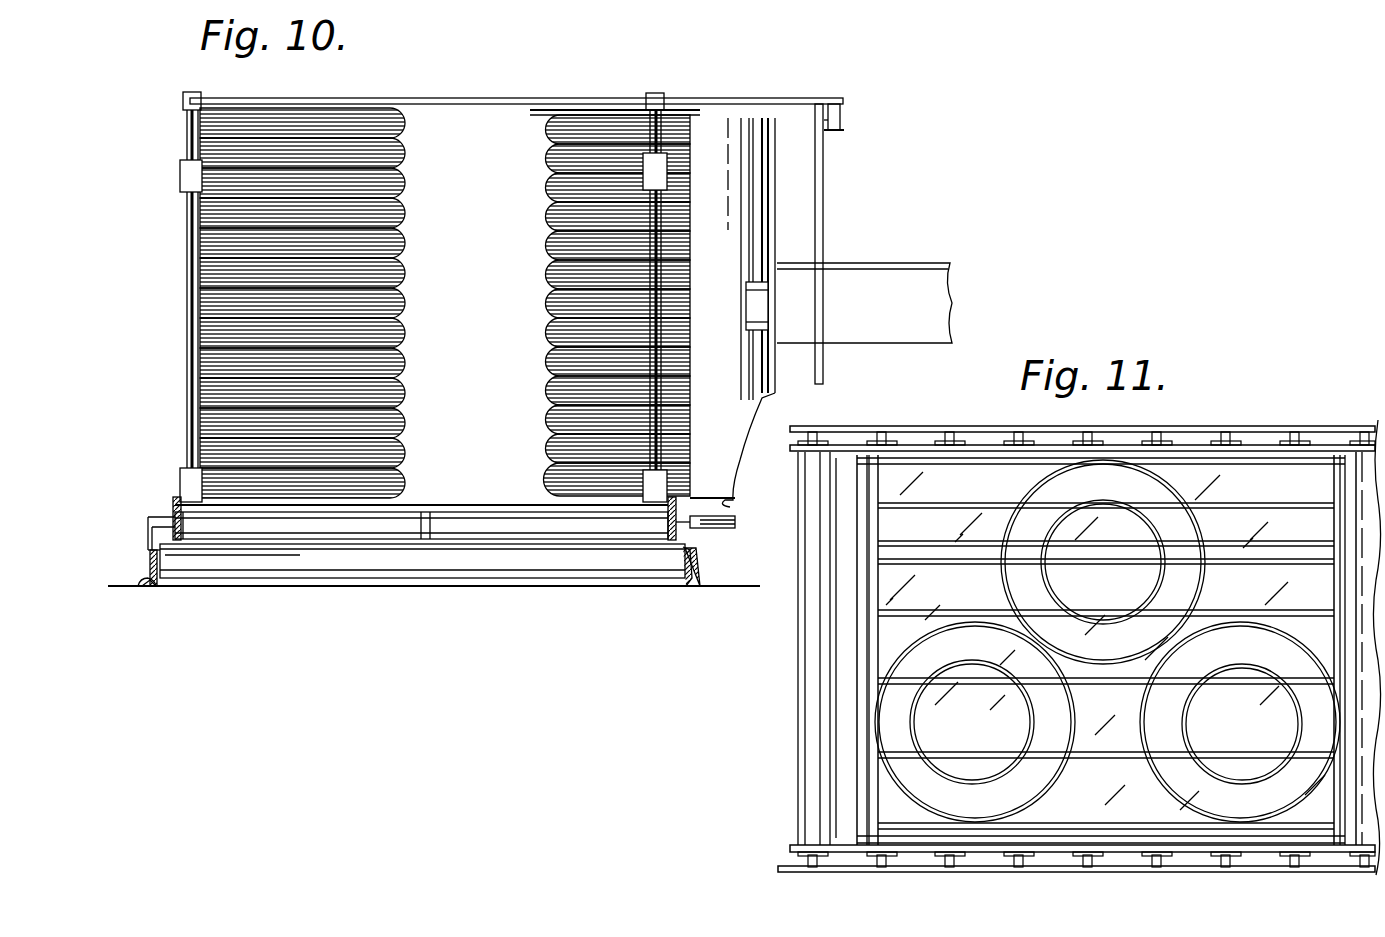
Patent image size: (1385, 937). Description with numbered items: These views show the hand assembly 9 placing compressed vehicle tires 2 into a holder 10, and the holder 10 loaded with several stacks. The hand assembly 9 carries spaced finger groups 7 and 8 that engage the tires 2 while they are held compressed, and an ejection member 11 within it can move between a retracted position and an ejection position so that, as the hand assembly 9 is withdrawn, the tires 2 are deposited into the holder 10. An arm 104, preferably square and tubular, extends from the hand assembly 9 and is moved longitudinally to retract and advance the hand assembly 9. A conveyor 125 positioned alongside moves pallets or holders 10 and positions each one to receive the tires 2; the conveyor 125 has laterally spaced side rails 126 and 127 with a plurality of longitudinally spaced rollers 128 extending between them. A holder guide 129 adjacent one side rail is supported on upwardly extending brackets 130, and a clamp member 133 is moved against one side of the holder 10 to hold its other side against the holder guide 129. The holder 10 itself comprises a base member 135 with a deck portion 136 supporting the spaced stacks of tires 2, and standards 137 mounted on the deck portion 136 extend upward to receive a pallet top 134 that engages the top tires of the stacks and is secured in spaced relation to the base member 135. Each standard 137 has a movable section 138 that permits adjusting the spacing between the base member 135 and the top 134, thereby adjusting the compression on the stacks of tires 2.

In FIG. 10, the vehicle tires 2 is at (405, 270).
In FIG. 11, the vehicle tires 2 is at (1135, 488).
In FIG. 10, the finger group 7 is at (800, 104).
In FIG. 10, the finger group 8 is at (735, 503).
In FIG. 10, the hand assembly 9 is at (826, 212).
In FIG. 10, the holder 10 is at (203, 97).
In FIG. 11, the holder 10 is at (862, 607).
In FIG. 10, the ejection member 11 is at (742, 222).
In FIG. 10, the arm 104 is at (915, 263).
In FIG. 10, the conveyor 125 is at (148, 554).
In FIG. 11, the conveyor 125 is at (800, 667).
In FIG. 10, the side rail 126 is at (138, 586).
In FIG. 11, the side rail 126 is at (782, 866).
In FIG. 10, the side rail 127 is at (690, 586).
In FIG. 11, the side rail 127 is at (868, 428).
In FIG. 10, the rollers 128 is at (445, 557).
In FIG. 11, the rollers 128 is at (810, 745).
In FIG. 10, the holder guide 129 is at (174, 498).
In FIG. 11, the holder guide 129 is at (818, 842).
In FIG. 10, the brackets 130 is at (148, 518).
In FIG. 10, the clamp member 133 is at (676, 530).
In FIG. 11, the clamp member 133 is at (843, 455).
In FIG. 10, the pallet top 134 is at (436, 98).
In FIG. 11, the pallet top 134 is at (1290, 478).
In FIG. 10, the base member 135 is at (428, 522).
In FIG. 10, the deck portion 136 is at (415, 505).
In FIG. 11, the deck portion 136 is at (1230, 487).
In FIG. 10, the standards 137 is at (190, 326).
In FIG. 10, the movable section 138 is at (186, 135).